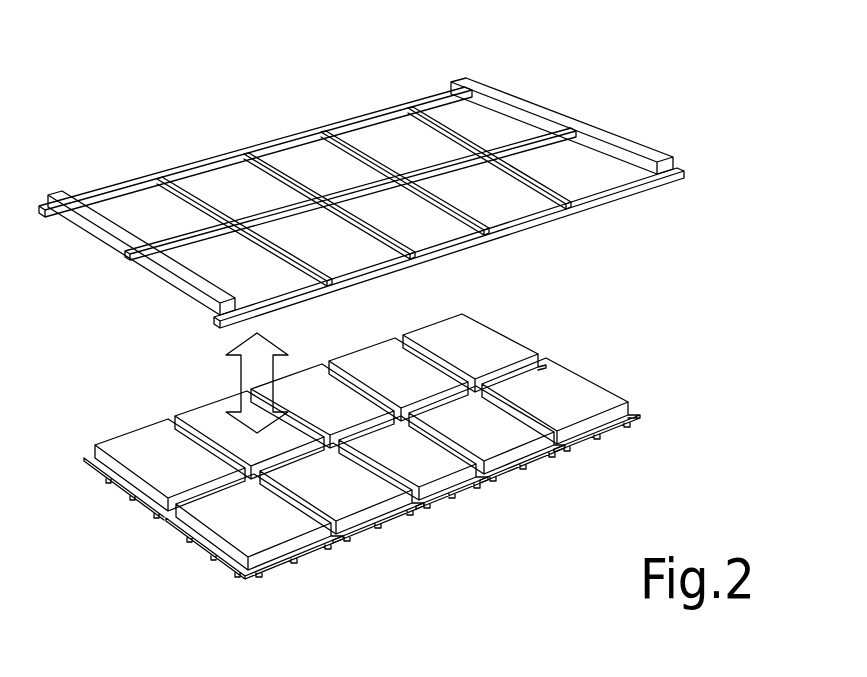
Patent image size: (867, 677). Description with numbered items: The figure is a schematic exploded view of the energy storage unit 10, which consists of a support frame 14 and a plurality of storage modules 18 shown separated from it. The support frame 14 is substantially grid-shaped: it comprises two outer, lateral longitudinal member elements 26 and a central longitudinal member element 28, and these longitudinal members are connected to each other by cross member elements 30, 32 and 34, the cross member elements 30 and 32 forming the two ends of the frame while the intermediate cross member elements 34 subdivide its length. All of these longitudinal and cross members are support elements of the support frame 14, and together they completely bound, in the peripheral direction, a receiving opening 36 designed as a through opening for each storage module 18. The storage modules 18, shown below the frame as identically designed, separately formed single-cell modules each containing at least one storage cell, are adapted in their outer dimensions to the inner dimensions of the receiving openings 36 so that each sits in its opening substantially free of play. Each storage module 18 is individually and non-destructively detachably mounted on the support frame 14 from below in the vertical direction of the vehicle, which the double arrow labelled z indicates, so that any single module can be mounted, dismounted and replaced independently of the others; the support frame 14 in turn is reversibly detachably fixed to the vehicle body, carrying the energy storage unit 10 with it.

The energy storage unit 10 is at (637, 75).
The support frame 14 is at (510, 88).
The storage modules 18 is at (208, 425).
The outer lateral longitudinal member elements 26 is at (275, 140).
The central longitudinal member element 28 is at (400, 173).
The cross member element 30 is at (177, 278).
The cross member element 32 is at (633, 140).
The cross member elements 34 is at (193, 197).
The receiving opening 36 is at (143, 228).
The vertical direction z is at (252, 393).